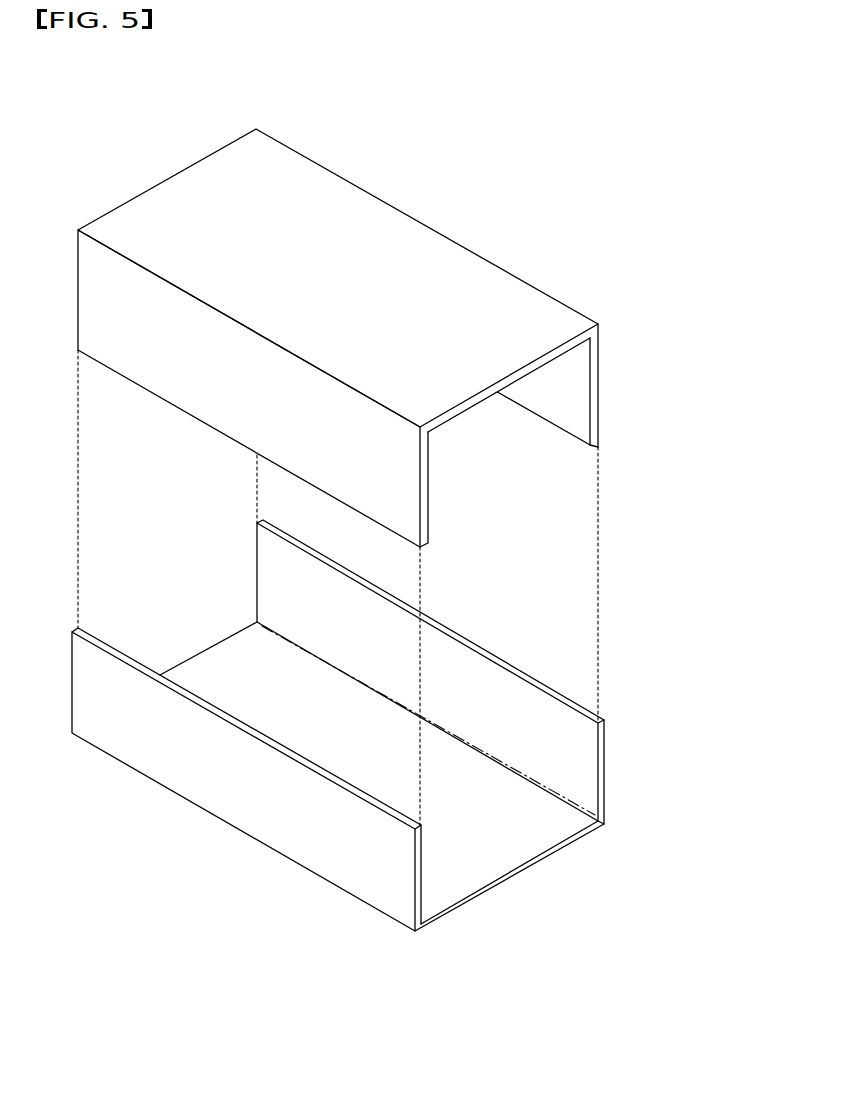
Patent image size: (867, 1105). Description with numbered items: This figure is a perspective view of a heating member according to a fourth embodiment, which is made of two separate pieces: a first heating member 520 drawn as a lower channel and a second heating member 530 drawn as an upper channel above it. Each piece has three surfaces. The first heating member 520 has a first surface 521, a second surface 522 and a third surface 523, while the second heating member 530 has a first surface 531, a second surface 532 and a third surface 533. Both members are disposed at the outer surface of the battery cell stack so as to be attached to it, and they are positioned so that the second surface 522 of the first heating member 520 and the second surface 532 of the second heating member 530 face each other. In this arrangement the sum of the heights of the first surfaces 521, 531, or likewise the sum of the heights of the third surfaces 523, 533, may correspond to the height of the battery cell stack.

The first heating member 520 is at (389, 729).
The first surface of the first heating member 521 is at (332, 830).
The second surface of the first heating member 522 is at (487, 852).
The third surface of the first heating member 523 is at (605, 770).
The second heating member 530 is at (401, 325).
The first surface of the second heating member 531 is at (222, 381).
The second surface of the second heating member 532 is at (370, 248).
The third surface of the second heating member 533 is at (599, 383).